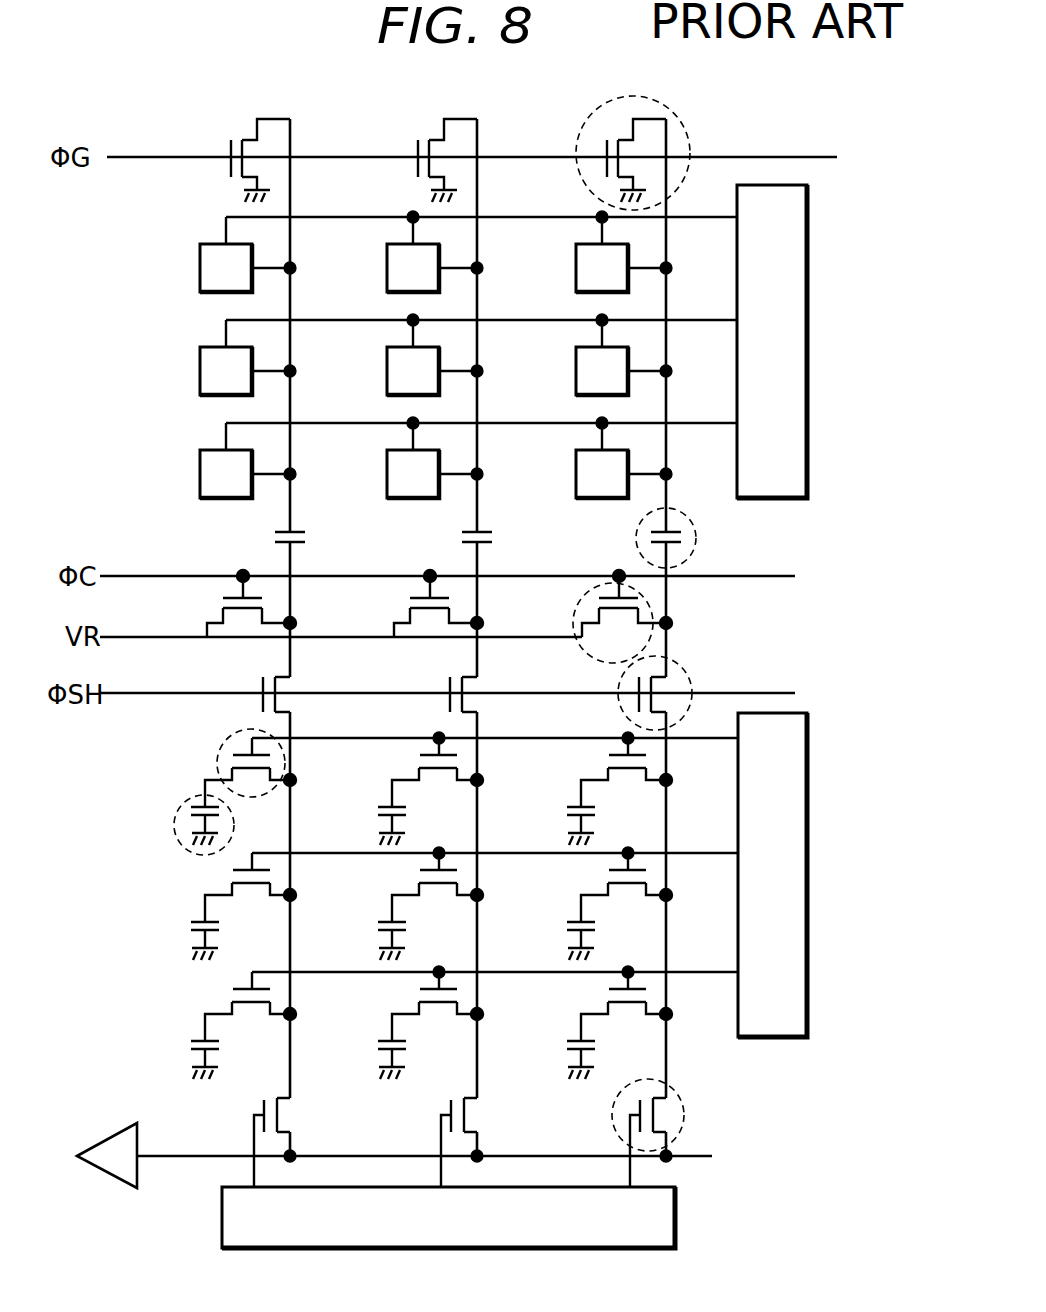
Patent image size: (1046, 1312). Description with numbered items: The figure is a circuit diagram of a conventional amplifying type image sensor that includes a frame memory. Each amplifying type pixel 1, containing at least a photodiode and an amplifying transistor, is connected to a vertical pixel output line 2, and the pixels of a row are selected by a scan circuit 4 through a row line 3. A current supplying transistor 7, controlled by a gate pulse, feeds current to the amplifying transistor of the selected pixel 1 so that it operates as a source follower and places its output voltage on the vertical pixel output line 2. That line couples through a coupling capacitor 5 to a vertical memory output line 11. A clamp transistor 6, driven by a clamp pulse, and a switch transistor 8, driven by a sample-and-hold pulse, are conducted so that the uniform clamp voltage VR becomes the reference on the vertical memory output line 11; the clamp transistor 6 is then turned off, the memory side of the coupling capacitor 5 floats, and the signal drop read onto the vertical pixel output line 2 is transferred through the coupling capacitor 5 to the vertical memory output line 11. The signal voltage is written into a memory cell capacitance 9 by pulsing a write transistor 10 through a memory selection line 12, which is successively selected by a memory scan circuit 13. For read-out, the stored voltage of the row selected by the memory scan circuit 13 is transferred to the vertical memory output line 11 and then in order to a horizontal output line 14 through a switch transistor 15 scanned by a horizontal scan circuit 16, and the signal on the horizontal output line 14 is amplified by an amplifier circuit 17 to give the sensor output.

The amplifying type pixel 1 is at (200, 259).
The vertical pixel output line 2 is at (668, 385).
The row selection line 3 is at (690, 426).
The scan circuit 4 is at (810, 330).
The coupling capacitor 5 is at (697, 532).
The clamp transistor 6 is at (575, 605).
The current supplying transistor 7 is at (585, 122).
The switch transistor 8 is at (693, 675).
The memory cell capacitance 9 is at (178, 810).
The write transistor 10 is at (226, 742).
The vertical memory output line 11 is at (667, 921).
The memory selection line 12 is at (697, 975).
The memory scan circuit 13 is at (810, 866).
The horizontal output line 14 is at (175, 1159).
The switch transistor 15 is at (686, 1115).
The horizontal scan circuit 16 is at (677, 1220).
The amplifier circuit 17 is at (100, 1168).